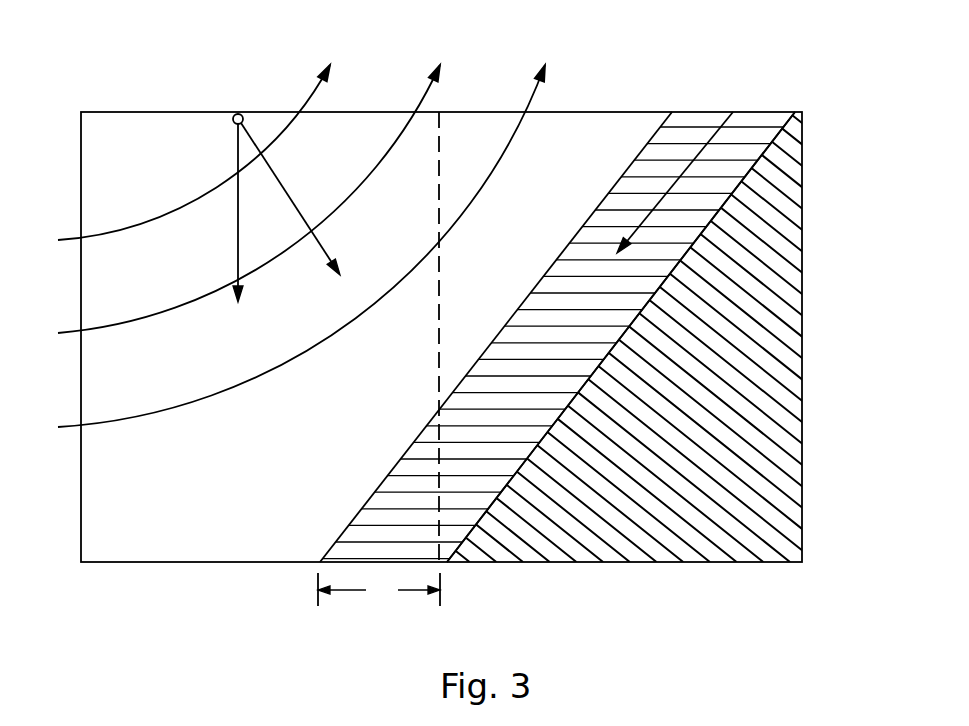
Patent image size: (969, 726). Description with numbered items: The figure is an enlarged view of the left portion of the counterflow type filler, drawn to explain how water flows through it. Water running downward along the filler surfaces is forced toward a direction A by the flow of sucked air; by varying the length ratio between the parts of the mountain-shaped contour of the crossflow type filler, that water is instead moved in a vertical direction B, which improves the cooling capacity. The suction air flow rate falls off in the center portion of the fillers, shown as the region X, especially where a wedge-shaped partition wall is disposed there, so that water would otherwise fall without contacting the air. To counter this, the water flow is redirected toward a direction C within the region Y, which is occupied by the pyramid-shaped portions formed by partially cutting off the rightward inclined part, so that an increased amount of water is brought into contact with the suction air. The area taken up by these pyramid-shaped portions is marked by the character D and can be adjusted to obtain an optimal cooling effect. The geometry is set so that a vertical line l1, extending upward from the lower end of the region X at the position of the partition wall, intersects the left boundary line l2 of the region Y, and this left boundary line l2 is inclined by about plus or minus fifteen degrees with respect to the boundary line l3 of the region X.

The direction A is at (296, 215).
The vertical direction B is at (239, 224).
The direction C is at (665, 199).
The area occupied by the pyramid-shaped portions D is at (379, 589).
The vertical line l1 is at (463, 541).
The left boundary line of region Y l2 is at (656, 142).
The boundary line of region X l3 is at (775, 152).
The region X is at (802, 332).
The region Y is at (744, 134).